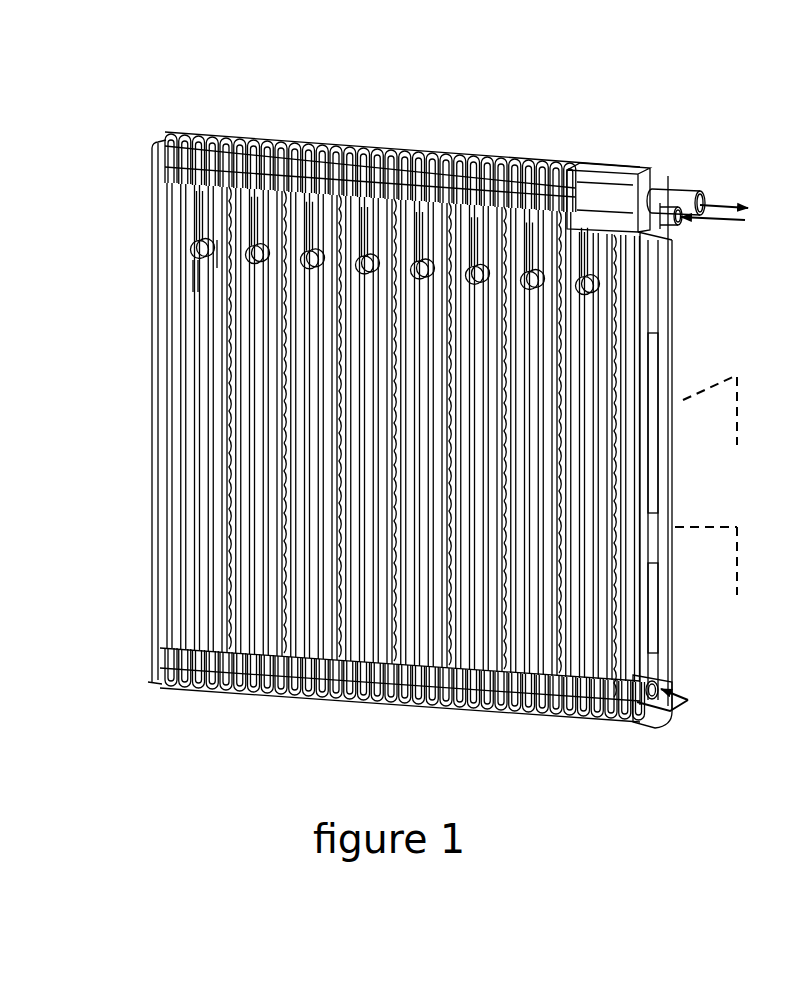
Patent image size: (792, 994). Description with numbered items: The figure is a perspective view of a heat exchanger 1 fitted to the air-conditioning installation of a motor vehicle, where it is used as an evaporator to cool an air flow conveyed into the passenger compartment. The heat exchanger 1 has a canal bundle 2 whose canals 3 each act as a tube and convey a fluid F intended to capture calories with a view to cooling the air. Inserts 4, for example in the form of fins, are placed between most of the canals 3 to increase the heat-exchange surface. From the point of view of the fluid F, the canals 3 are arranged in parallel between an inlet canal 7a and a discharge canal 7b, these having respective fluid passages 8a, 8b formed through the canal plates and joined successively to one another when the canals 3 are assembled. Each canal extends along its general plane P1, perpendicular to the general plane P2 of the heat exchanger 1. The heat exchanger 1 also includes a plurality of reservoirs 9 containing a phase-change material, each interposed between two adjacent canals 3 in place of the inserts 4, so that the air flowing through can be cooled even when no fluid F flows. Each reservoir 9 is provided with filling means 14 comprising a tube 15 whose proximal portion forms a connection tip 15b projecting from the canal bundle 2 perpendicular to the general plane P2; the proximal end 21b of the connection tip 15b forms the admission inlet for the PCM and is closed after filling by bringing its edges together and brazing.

The heat exchanger 1 is at (248, 738).
The canal bundle 2 is at (343, 482).
The canals 3 is at (336, 638).
The inserts 4 is at (410, 654).
The inlet canal 7a is at (662, 235).
The discharge canal 7b is at (688, 182).
The fluid passage 8a is at (447, 186).
The fluid passage 8b is at (455, 182).
The reservoir 9 is at (215, 354).
The filling means 14 is at (188, 276).
The tube 15 is at (216, 262).
The connection tip 15b is at (198, 236).
The proximal end 21b is at (190, 240).
The general plane of the canal P1 is at (710, 411).
The general plane of the heat exchanger P2 is at (706, 561).
The fluid F is at (700, 463).